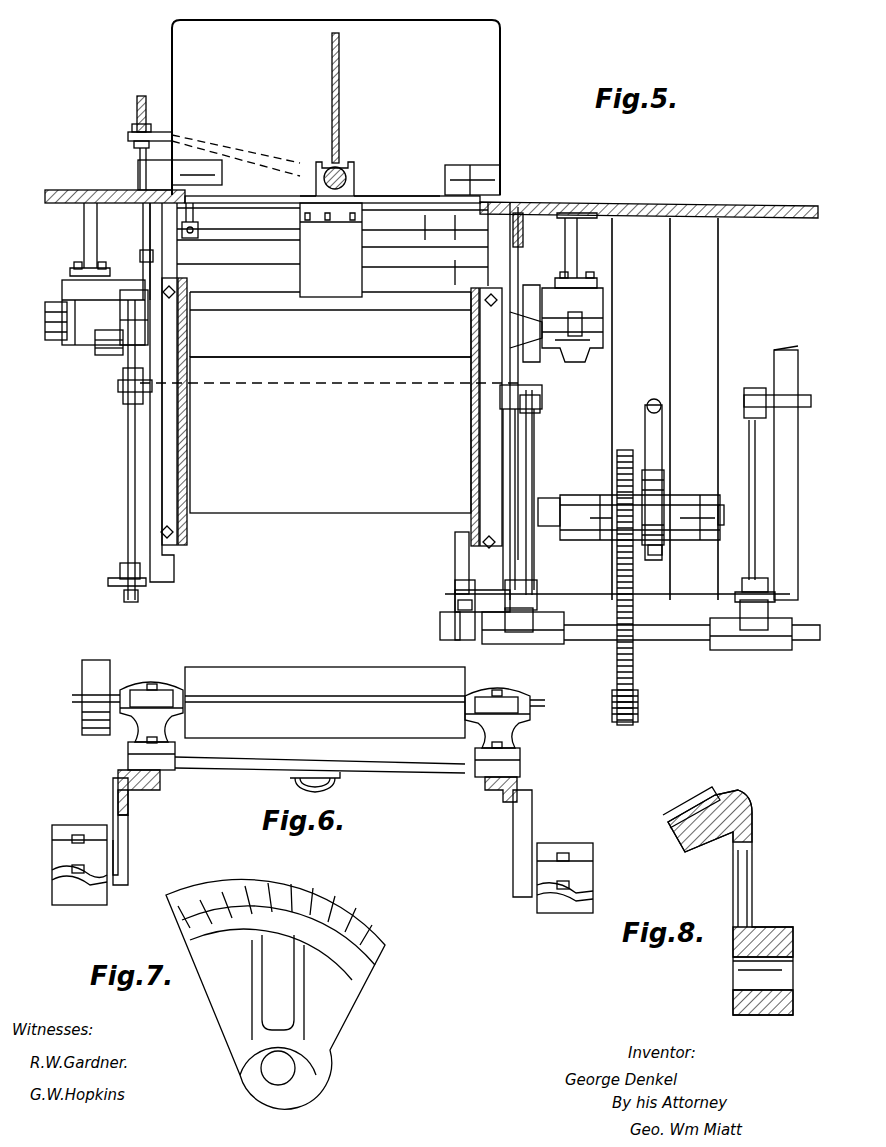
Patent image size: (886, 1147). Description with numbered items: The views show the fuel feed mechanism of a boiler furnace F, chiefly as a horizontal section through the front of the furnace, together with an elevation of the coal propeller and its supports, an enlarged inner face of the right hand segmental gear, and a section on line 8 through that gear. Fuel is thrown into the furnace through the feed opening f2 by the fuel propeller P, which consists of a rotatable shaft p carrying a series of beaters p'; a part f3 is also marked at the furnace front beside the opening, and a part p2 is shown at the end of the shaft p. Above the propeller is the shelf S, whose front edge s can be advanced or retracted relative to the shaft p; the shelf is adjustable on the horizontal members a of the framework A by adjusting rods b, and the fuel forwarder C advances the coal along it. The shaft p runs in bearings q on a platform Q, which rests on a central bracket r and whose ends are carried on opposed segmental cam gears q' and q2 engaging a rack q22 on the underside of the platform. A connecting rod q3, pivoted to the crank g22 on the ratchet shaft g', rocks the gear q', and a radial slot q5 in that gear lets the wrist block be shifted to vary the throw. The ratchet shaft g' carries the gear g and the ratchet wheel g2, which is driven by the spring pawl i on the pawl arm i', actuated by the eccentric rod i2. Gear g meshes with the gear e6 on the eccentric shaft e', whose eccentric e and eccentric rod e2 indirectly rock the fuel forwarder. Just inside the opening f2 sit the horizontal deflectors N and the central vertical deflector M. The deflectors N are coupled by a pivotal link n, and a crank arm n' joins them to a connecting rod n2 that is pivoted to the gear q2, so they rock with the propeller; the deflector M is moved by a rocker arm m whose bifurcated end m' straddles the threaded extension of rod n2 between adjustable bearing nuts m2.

In FIG. 5, the horizontal deflectors N is at (336, 107).
In FIG. 5, the vertical deflector M is at (340, 98).
In FIG. 5, the rocker arm m is at (167, 149).
In FIG. 5, the bifurcated end m' is at (122, 133).
In FIG. 5, the adjustable bearing nuts m2 is at (132, 124).
In FIG. 5, the pivotal link n is at (205, 220).
In FIG. 5, the crank arm n' is at (180, 175).
In FIG. 5, the connecting rod n2 is at (140, 224).
In FIG. 5, the feed opening f2 is at (403, 196).
In FIG. 5, the plate f3 is at (528, 250).
In FIG. 5, the boiler furnace F is at (431, 395).
In FIG. 5, the bracket r is at (331, 250).
In FIG. 6, the bracket r is at (345, 778).
In FIG. 5, the front edge s is at (408, 300).
In FIG. 5, the shelf S is at (330, 337).
In FIG. 5, the fuel forwarder C is at (330, 435).
In FIG. 5, the beaters p' is at (328, 411).
In FIG. 6, the beaters p' is at (365, 695).
In FIG. 5, the propeller shaft p is at (105, 377).
In FIG. 6, the propeller shaft p is at (312, 671).
In FIG. 5, the pulley p2 is at (74, 321).
In FIG. 6, the pulley p2 is at (80, 704).
In FIG. 5, the bearings q is at (134, 317).
In FIG. 6, the bearings q is at (325, 715).
In FIG. 5, the segmental cam gear q' is at (556, 287).
In FIG. 6, the segmental cam gear q' is at (549, 807).
In FIG. 7, the segmental cam gear q' is at (275, 994).
In FIG. 8, the segmental cam gear q' is at (728, 901).
In FIG. 5, the segmental cam gear q2 is at (131, 270).
In FIG. 6, the segmental cam gear q2 is at (322, 845).
In FIG. 5, the connecting rod q3 is at (552, 432).
In FIG. 6, the rack q22 is at (164, 791).
In FIG. 7, the radial slot q5 is at (300, 1008).
In FIG. 8, the radial slot q5 is at (756, 888).
In FIG. 5, the horizontal members a is at (474, 401).
In FIG. 5, the adjusting rods b is at (458, 451).
In FIG. 5, the framework A is at (560, 570).
In FIG. 5, the eccentric e is at (447, 610).
In FIG. 5, the eccentric shaft e' is at (616, 624).
In FIG. 5, the eccentric rod e2 is at (446, 543).
In FIG. 5, the gear e6 is at (634, 701).
In FIG. 5, the gear g is at (625, 575).
In FIG. 5, the ratchet shaft g' is at (651, 517).
In FIG. 5, the ratchet wheel g2 is at (662, 563).
In FIG. 5, the crank g22 is at (568, 498).
In FIG. 5, the spring pawl i is at (665, 503).
In FIG. 5, the pawl arm i' is at (669, 482).
In FIG. 5, the eccentric rod i2 is at (662, 404).
In FIG. 6, the fuel propeller P is at (325, 692).
In FIG. 6, the platform Q is at (320, 757).
In FIG. 7, the section line 8 is at (280, 892).